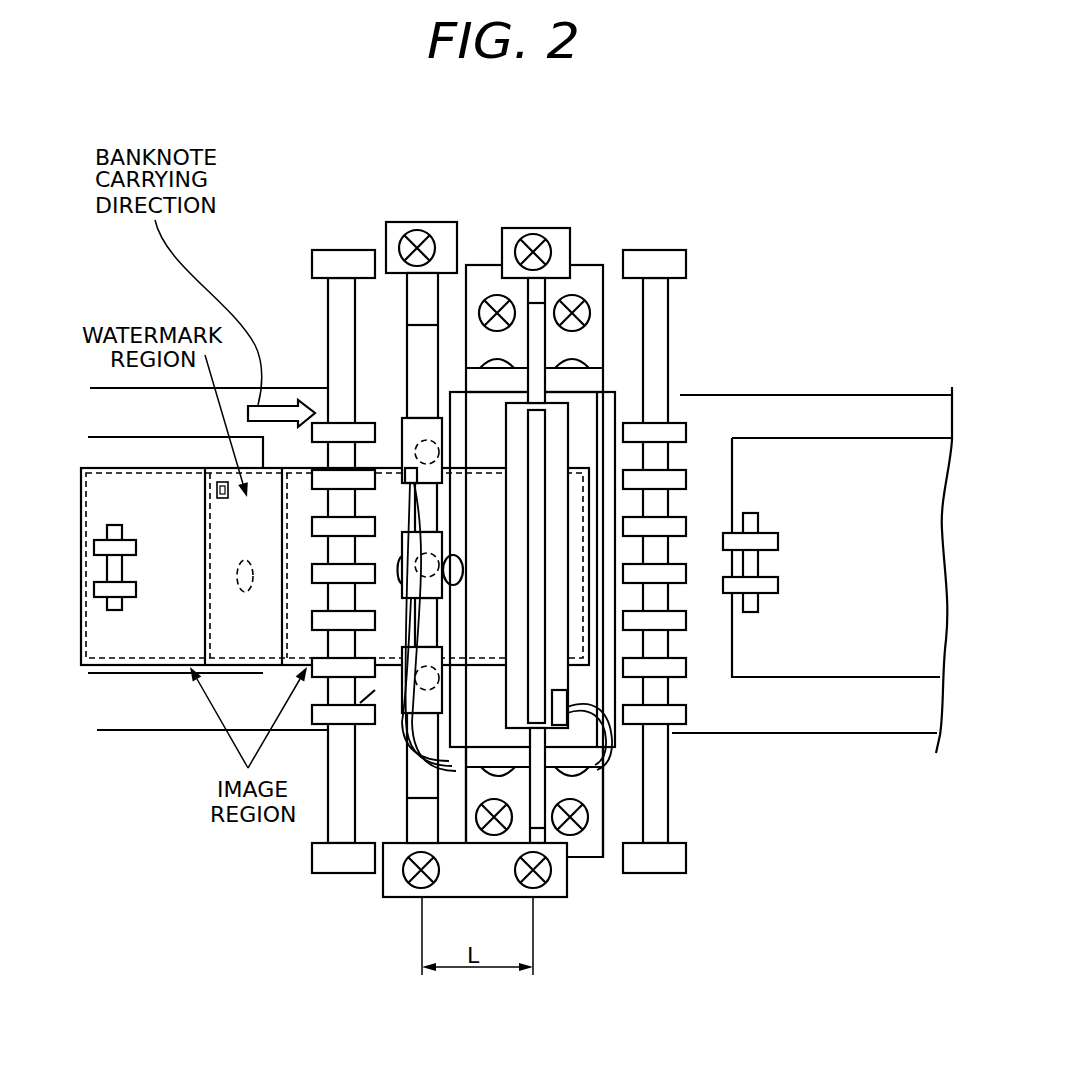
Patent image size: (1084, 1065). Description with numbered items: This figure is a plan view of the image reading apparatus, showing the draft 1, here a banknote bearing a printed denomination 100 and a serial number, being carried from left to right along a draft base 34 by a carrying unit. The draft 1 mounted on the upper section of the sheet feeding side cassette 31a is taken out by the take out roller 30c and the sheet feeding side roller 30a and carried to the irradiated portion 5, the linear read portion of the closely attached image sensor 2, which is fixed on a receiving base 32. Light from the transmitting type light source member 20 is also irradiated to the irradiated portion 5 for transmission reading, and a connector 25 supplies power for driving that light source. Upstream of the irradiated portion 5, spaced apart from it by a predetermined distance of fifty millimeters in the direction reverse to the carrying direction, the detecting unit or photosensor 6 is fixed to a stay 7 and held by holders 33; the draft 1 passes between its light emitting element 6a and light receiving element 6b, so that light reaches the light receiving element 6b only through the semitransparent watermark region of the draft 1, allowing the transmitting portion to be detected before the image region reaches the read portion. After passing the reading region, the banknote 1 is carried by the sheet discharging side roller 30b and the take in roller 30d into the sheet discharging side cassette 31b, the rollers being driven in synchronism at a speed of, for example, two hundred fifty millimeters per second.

The irradiated object (draft or banknote) 1 is at (335, 625).
The closely attached image sensor (CIS) 2 is at (480, 728).
The irradiated portion 5 is at (540, 452).
The detecting unit (photosensor) 6 is at (400, 410).
The light emitting element 6a is at (415, 443).
The light receiving element 6b is at (431, 565).
The stay 7 is at (422, 360).
The transmitting type light source member 20 is at (557, 413).
The connector 25 is at (567, 712).
The sheet feeding side roller 30a is at (342, 318).
The sheet discharging side roller 30b is at (665, 413).
The take out roller 30c is at (102, 605).
The take in roller 30d is at (780, 590).
The sheet feeding side cassette 31a is at (158, 673).
The sheet discharging side cassette 31b is at (785, 678).
The receiving base 32 is at (587, 845).
The holder 33 is at (445, 243).
The draft base 34 is at (127, 397).
The denomination printed on banknote 100 is at (139, 577).